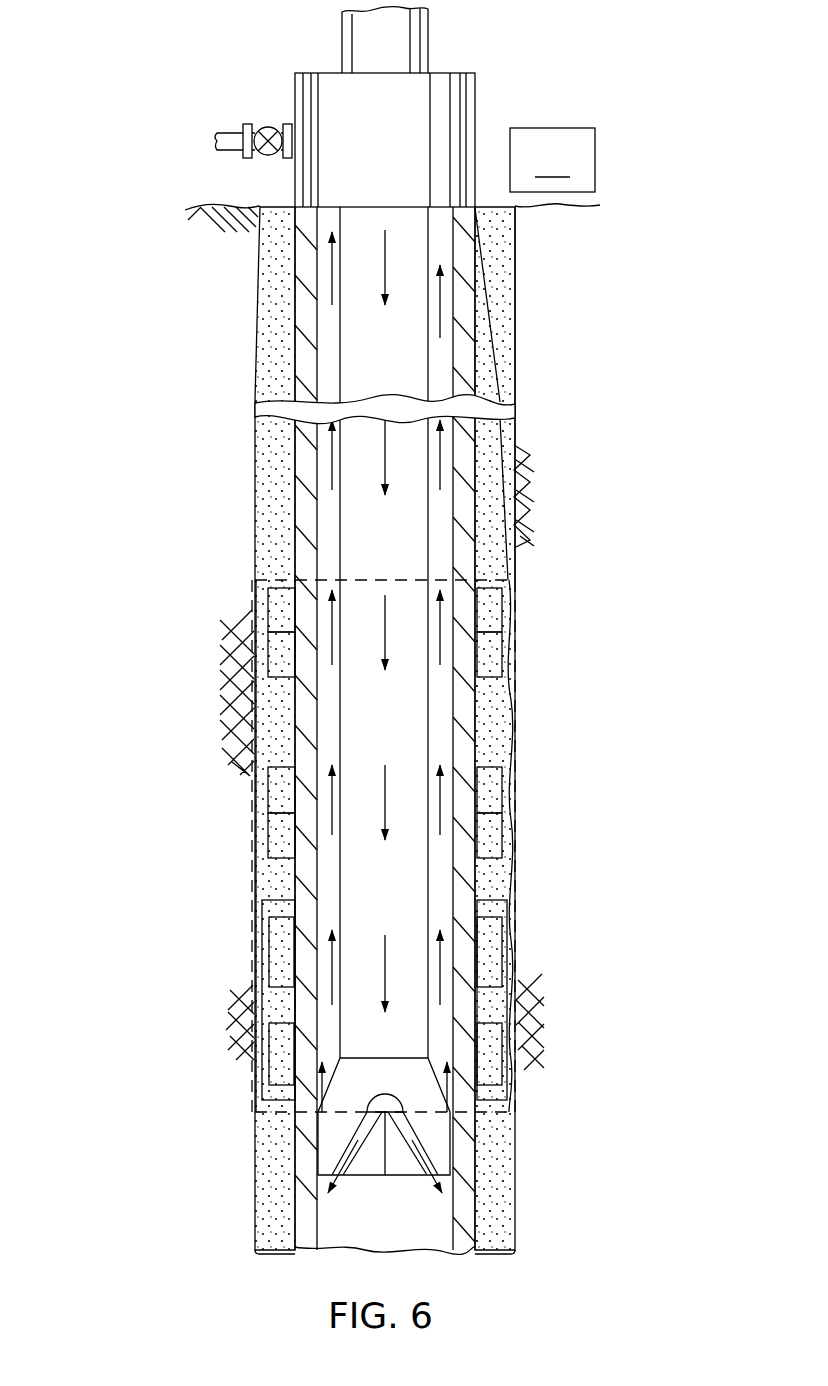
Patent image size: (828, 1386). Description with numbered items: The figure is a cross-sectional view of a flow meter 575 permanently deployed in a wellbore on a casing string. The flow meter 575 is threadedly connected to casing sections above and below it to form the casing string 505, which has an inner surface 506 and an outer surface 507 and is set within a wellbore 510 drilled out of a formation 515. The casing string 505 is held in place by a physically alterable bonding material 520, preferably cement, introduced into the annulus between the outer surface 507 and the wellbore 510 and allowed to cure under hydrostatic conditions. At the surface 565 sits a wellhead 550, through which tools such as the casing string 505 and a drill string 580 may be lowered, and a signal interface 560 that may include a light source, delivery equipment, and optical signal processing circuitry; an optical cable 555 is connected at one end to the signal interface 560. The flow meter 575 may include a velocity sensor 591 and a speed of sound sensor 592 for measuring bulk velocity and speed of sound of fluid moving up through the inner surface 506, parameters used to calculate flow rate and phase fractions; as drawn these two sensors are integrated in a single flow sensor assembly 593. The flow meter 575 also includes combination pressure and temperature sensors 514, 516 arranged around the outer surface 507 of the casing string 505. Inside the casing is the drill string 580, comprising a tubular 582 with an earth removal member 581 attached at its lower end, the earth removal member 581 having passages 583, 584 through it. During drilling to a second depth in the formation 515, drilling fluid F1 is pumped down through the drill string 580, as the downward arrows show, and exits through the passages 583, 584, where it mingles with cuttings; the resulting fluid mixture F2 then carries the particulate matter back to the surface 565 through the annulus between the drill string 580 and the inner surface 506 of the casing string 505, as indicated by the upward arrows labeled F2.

The casing string 505 is at (300, 362).
The inner surface 506 is at (316, 279).
The outer surface 507 is at (295, 322).
The wellbore 510 is at (518, 545).
The combination pressure and temperature sensor 514 is at (510, 808).
The formation 515 is at (518, 487).
The combination pressure and temperature sensor 516 is at (513, 628).
The physically alterable bonding material 520 is at (283, 713).
The wellhead 550 is at (297, 88).
The optical cable 555 is at (495, 355).
The signal interface 560 is at (492, 207).
The surface 565 is at (218, 203).
The flow meter 575 is at (248, 804).
The drill string 580 is at (432, 877).
The earth removal member 581 is at (320, 1070).
The tubular 582 is at (340, 882).
The passage 583 is at (322, 1133).
The passage 584 is at (440, 1133).
The velocity sensor 591 is at (270, 1042).
The speed of sound sensor 592 is at (270, 943).
The flow sensor assembly 593 is at (517, 992).
The drilling fluid F1 is at (385, 230).
The fluid mixture F2 is at (328, 258).